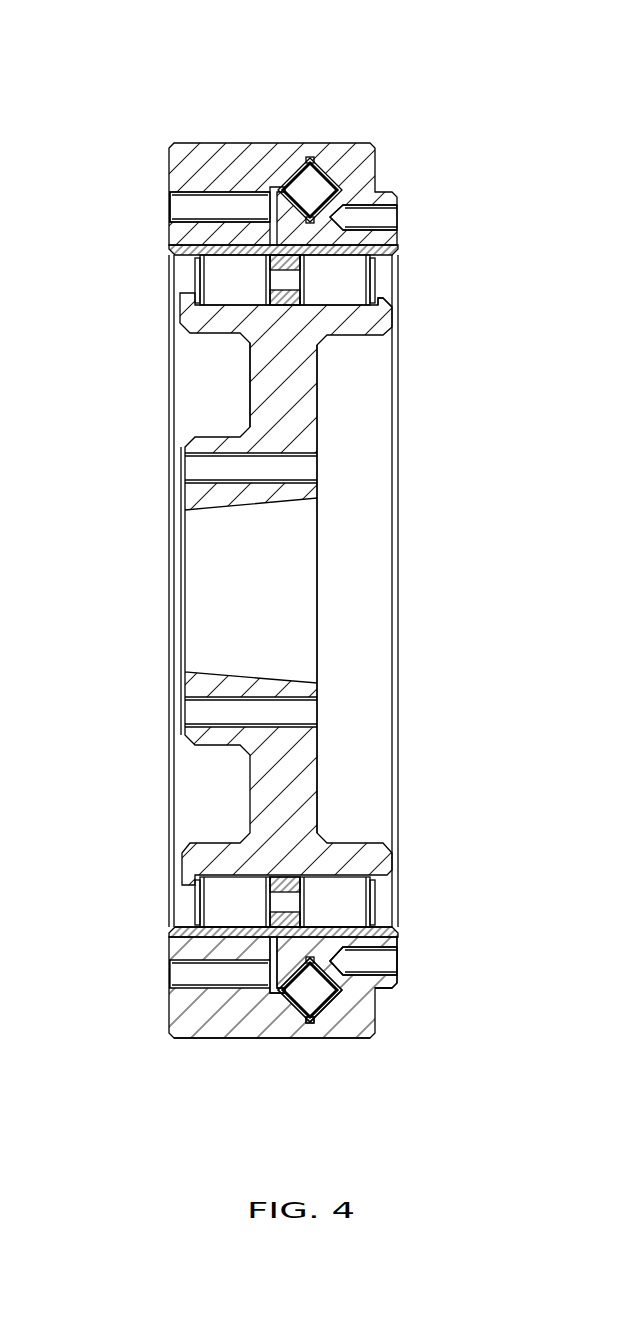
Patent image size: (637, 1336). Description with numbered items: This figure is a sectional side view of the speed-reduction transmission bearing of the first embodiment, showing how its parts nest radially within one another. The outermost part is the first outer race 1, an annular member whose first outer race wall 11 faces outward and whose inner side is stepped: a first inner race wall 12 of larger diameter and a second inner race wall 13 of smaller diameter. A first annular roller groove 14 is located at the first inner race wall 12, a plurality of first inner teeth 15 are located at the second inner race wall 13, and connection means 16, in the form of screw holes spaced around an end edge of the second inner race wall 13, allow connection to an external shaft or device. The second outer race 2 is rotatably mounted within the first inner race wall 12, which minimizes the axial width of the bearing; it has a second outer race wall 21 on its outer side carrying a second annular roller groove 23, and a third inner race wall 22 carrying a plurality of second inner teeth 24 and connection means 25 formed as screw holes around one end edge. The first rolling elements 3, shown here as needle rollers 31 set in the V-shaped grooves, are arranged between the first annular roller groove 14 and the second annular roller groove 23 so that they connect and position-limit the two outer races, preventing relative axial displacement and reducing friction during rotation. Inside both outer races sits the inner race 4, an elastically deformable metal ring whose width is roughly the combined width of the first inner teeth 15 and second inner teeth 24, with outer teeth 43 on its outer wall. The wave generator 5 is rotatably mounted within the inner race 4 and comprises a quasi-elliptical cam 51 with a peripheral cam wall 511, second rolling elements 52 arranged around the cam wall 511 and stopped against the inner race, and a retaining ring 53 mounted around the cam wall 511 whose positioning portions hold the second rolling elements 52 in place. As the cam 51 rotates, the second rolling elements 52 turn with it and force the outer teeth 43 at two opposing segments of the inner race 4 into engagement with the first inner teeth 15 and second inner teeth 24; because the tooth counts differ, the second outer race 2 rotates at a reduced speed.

The first outer race 1 is at (177, 1008).
The first outer race wall 11 is at (197, 1038).
The first inner race wall 12 is at (362, 1016).
The second inner race wall 13 is at (167, 930).
The first annular roller groove 14 is at (335, 1000).
The first inner teeth 15 is at (205, 937).
The connection means 16 is at (190, 205).
The second outer race 2 is at (398, 988).
The second outer race wall 21 is at (377, 990).
The third inner race wall 22 is at (397, 932).
The second annular roller groove 23 is at (318, 935).
The second inner teeth 24 is at (345, 961).
The connection means 25 is at (383, 220).
The first rolling elements 3 is at (322, 192).
The needle rollers 31 is at (302, 998).
The inner race 4 is at (197, 887).
The outer teeth 43 is at (338, 880).
The wave generator 5 is at (318, 548).
The cam 51 is at (300, 393).
The cam wall 511 is at (380, 292).
The second rolling elements 52 is at (217, 275).
The retaining ring 53 is at (284, 257).